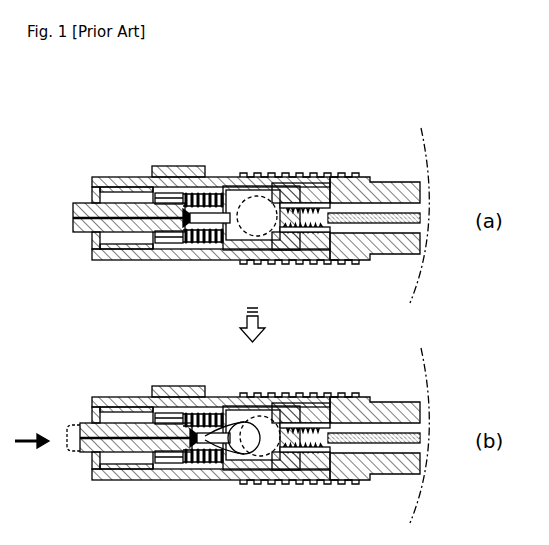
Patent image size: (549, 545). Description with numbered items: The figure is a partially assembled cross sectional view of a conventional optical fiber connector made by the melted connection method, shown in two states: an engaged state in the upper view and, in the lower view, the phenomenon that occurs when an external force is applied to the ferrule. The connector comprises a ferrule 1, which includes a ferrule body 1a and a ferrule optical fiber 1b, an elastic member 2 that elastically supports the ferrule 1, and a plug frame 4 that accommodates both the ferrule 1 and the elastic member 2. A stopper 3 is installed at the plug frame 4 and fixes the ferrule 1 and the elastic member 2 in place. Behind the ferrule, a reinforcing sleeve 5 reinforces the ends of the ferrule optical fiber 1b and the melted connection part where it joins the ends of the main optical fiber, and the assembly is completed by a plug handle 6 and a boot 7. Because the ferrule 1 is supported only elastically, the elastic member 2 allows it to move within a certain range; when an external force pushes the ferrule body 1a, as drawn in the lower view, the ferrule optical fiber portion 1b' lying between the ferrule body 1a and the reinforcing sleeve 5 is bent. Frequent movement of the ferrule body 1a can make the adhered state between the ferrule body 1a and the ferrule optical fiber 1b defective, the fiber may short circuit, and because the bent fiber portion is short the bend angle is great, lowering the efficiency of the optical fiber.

The ferrule 1 is at (163, 102).
The ferrule body 1a is at (120, 188).
The ferrule optical fiber 1b is at (182, 284).
The ferrule optical fiber portion 1b' is at (268, 367).
The elastic member 2 is at (200, 186).
The stopper 3 is at (247, 186).
The plug frame 4 is at (92, 183).
The reinforcing sleeve 5 is at (338, 177).
The plug handle 6 is at (100, 178).
The boot 7 is at (380, 182).